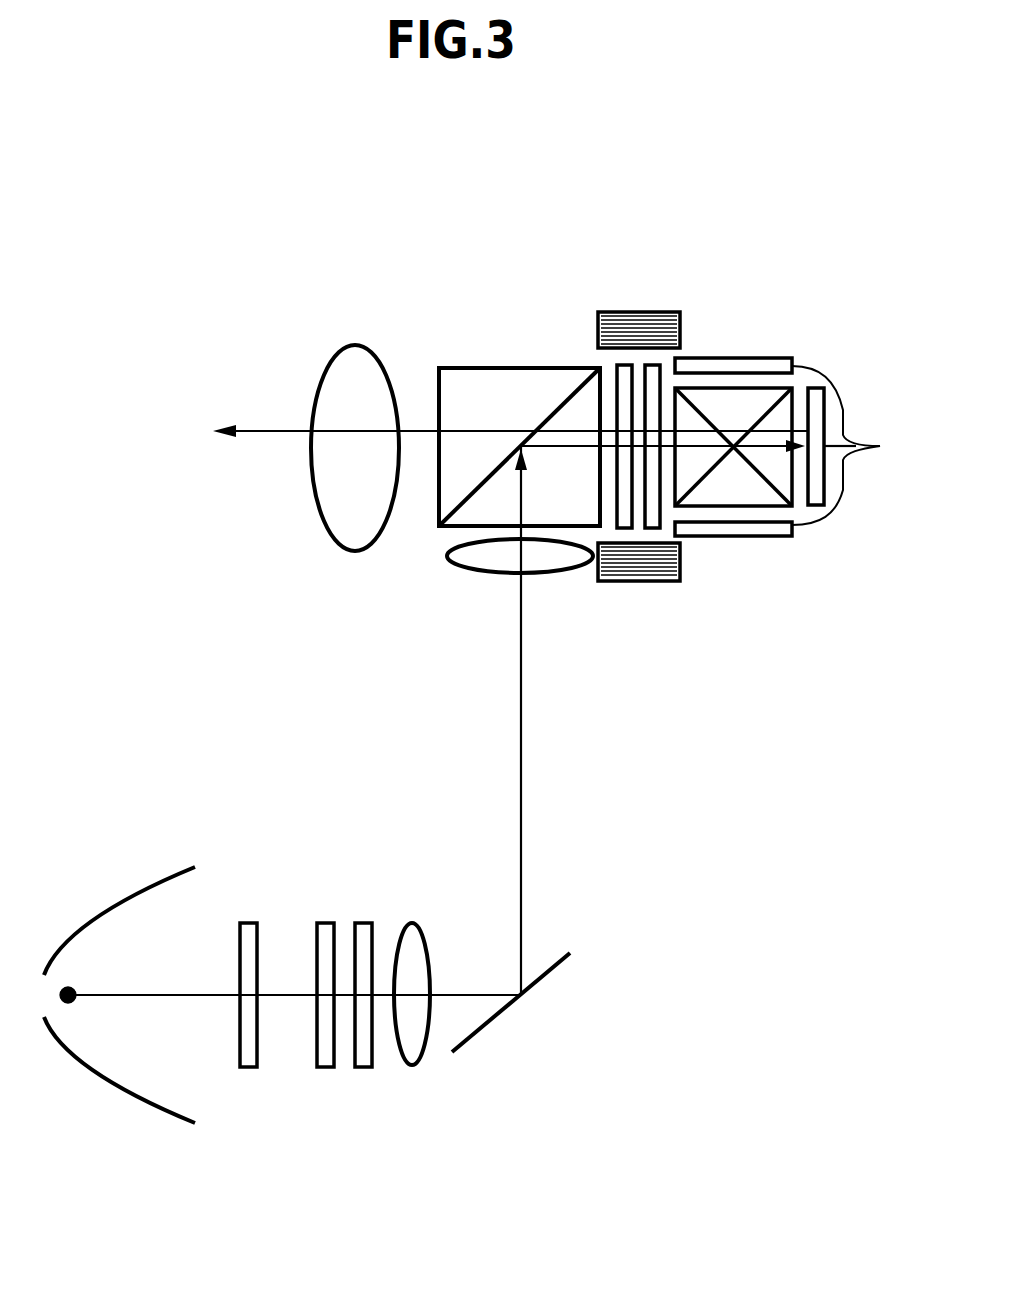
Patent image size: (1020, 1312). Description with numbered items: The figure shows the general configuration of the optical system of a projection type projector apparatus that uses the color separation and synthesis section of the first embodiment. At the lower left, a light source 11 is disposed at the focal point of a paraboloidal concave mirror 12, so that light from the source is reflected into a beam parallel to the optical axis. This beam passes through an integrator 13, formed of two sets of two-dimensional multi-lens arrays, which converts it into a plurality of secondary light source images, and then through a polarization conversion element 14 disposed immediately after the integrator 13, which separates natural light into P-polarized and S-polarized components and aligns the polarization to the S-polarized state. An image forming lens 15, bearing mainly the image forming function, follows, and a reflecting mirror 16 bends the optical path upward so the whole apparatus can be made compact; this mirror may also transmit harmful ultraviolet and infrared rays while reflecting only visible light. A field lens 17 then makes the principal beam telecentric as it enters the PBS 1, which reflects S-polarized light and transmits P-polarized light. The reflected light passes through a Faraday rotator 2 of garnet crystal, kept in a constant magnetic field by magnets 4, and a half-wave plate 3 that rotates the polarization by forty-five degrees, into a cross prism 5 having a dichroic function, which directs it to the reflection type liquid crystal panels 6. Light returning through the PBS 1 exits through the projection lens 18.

The PBS 1 is at (462, 377).
The Faraday rotator 2 is at (615, 378).
The half-wave plate 3 is at (665, 385).
The magnet 4 is at (640, 313).
The cross prism 5 is at (727, 493).
The reflection type liquid crystal panel 6 is at (851, 445).
The light source 11 is at (77, 987).
The concave mirror 12 is at (122, 895).
The integrator 13 is at (325, 1067).
The polarization conversion element 14 is at (363, 1067).
The image forming lens 15 is at (420, 1058).
The reflecting mirror 16 is at (545, 975).
The field lens 17 is at (478, 560).
The projection lens 18 is at (331, 383).